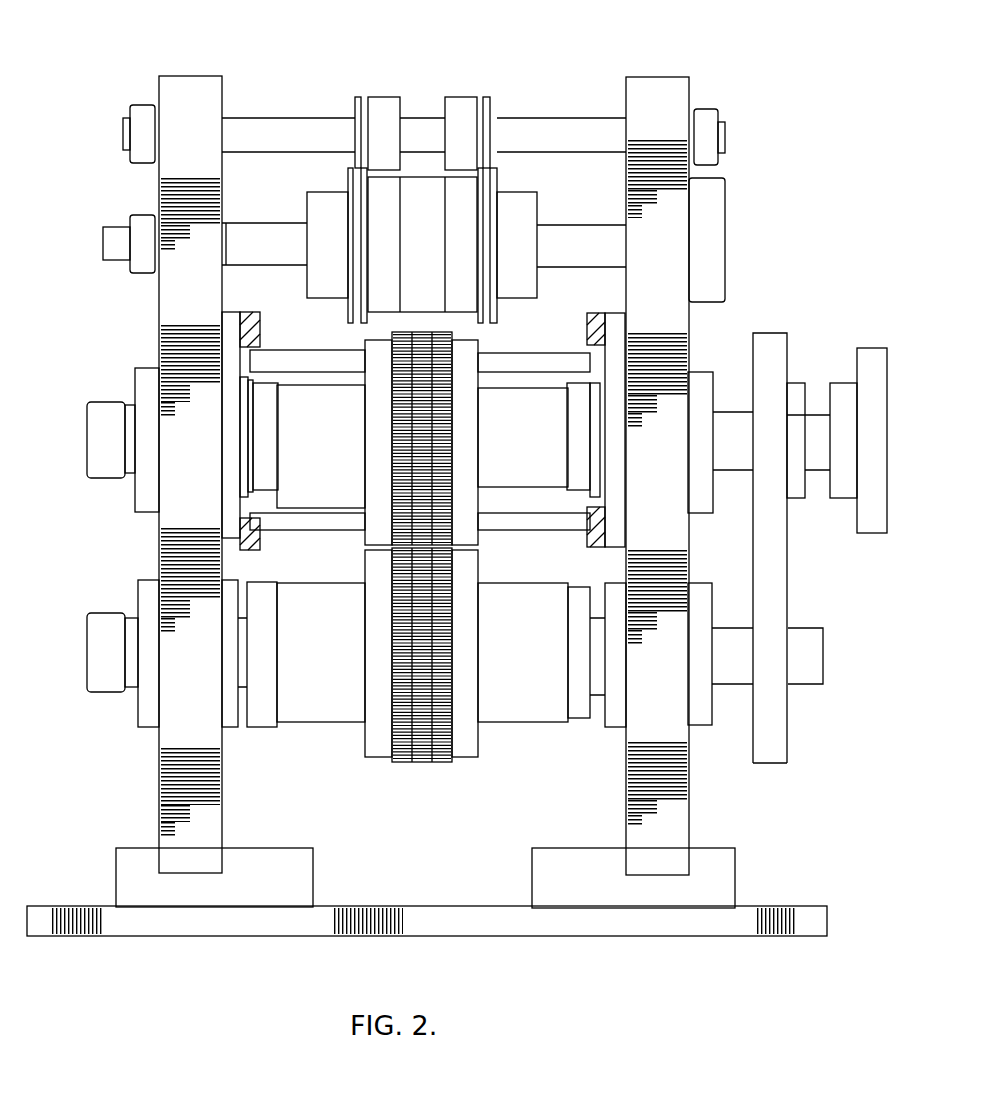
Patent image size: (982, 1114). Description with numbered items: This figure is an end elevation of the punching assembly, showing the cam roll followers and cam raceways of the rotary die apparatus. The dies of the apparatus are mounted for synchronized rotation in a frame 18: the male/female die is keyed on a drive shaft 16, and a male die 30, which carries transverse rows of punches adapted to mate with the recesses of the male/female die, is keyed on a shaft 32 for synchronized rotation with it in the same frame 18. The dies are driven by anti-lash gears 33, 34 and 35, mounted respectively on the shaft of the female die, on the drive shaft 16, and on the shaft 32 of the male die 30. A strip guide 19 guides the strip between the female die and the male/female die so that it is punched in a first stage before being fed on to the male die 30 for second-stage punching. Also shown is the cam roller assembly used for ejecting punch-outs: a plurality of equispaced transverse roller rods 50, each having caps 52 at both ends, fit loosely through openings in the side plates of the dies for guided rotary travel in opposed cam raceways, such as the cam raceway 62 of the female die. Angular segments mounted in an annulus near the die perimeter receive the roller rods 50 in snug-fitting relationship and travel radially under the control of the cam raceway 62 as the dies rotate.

The drive shaft 16 is at (735, 412).
The frame 18 is at (702, 66).
The strip guide 19 is at (553, 186).
The male die 30 is at (432, 765).
The shaft 32 is at (823, 652).
The anti-lash gear 33 is at (452, 462).
The anti-lash gear 34 is at (775, 332).
The anti-lash gear 35 is at (787, 745).
The roller rods 50 is at (548, 355).
The caps 52 is at (578, 340).
The cam raceway 62 is at (265, 500).